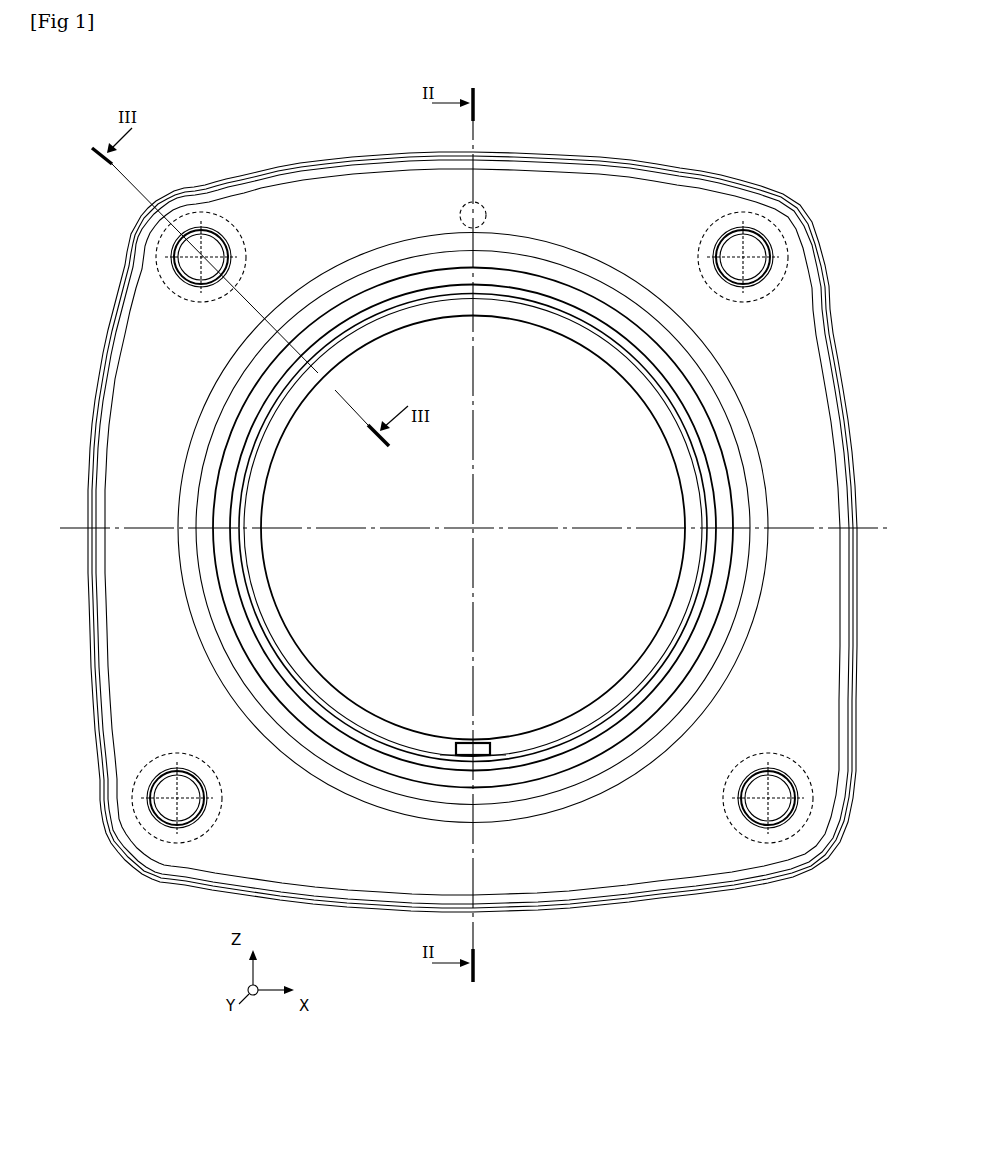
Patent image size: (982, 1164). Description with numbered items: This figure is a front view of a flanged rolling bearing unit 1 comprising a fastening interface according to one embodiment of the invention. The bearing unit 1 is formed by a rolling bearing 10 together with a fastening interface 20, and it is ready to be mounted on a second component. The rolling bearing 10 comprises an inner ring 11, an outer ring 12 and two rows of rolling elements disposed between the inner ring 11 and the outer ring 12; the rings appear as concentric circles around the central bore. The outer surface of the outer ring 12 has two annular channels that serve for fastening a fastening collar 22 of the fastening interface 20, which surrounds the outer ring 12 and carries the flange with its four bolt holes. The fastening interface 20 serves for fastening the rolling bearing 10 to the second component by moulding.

The bearing unit 1 is at (787, 157).
The rolling bearing 10 is at (648, 764).
The inner ring 11 is at (573, 727).
The outer ring 12 is at (530, 792).
The fastening interface 20 is at (182, 177).
The fastening collar 22 is at (583, 197).